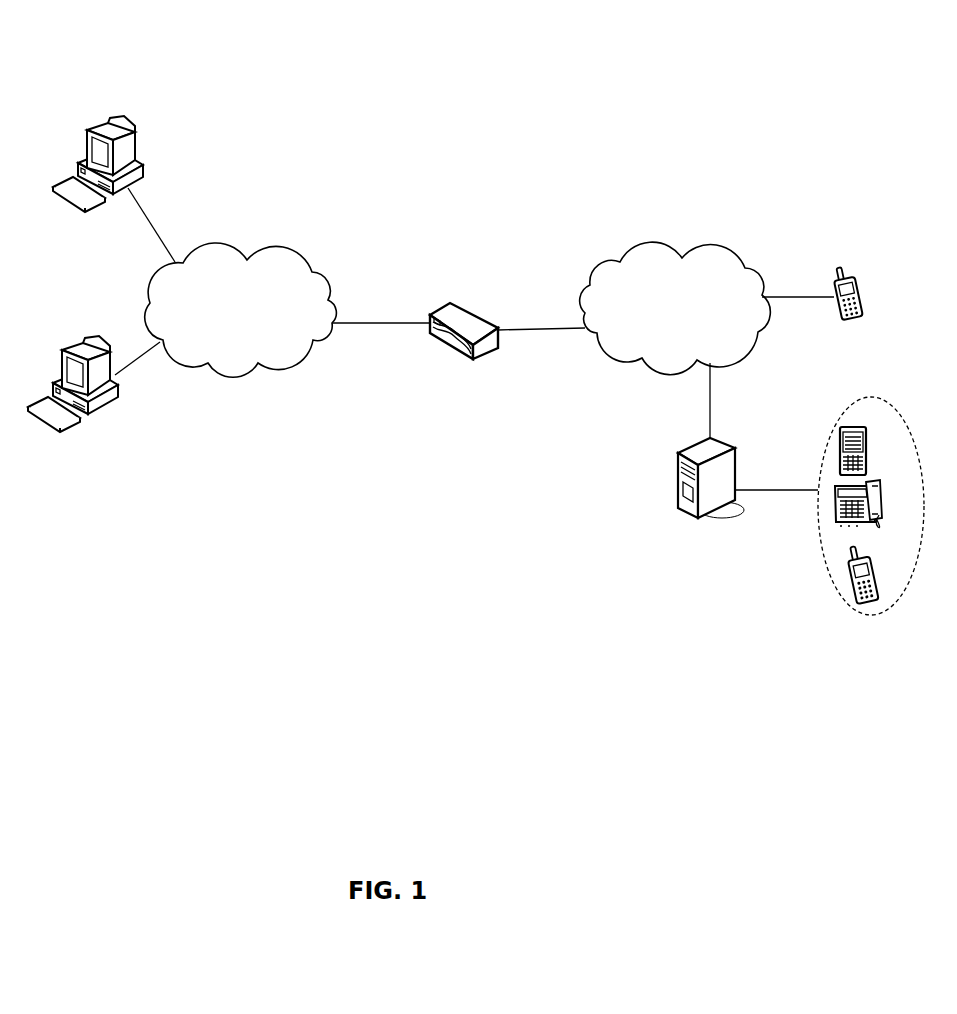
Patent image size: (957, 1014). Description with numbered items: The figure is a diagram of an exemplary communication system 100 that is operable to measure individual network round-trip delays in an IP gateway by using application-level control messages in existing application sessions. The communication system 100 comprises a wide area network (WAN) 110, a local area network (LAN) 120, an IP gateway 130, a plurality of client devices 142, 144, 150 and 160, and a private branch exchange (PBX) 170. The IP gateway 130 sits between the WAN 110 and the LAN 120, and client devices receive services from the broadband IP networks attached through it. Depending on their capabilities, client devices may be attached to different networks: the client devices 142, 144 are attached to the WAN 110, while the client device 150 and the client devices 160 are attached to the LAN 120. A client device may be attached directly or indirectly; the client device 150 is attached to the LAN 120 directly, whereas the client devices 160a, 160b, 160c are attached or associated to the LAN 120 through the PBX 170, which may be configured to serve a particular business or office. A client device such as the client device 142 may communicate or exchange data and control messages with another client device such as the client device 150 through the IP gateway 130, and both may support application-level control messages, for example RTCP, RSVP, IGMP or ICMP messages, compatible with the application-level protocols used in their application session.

The communication system 100 is at (760, 78).
The wide area network (WAN) 110 is at (296, 228).
The local area network (LAN) 120 is at (733, 226).
The IP gateway 130 is at (468, 311).
The client device 142 is at (153, 116).
The client device 144 is at (110, 335).
The client device 150 is at (880, 287).
The client devices 160 is at (938, 436).
The client device 160a is at (892, 453).
The client device 160b is at (910, 506).
The client device 160c is at (892, 561).
The private branch exchange (PBX) 170 is at (757, 438).